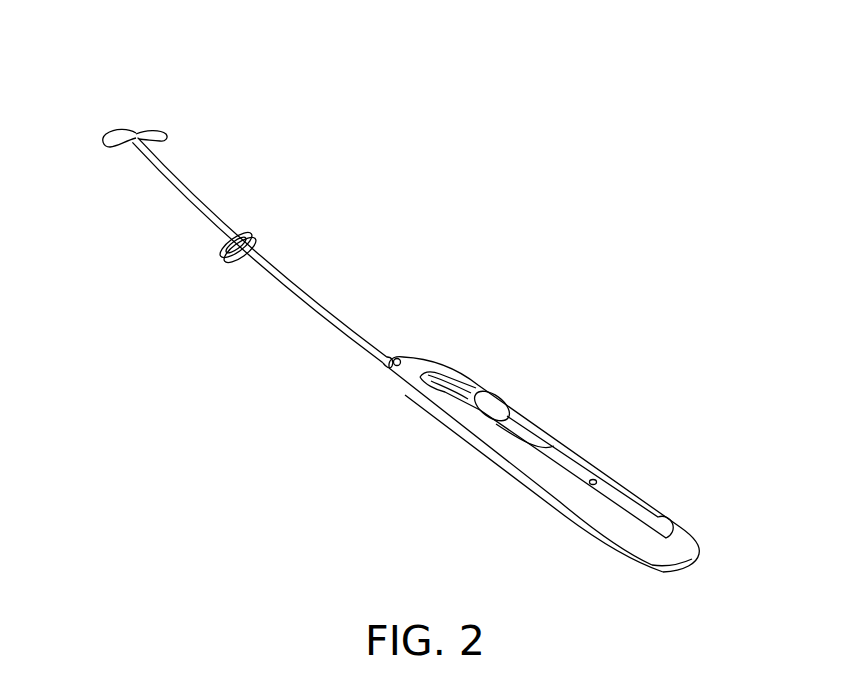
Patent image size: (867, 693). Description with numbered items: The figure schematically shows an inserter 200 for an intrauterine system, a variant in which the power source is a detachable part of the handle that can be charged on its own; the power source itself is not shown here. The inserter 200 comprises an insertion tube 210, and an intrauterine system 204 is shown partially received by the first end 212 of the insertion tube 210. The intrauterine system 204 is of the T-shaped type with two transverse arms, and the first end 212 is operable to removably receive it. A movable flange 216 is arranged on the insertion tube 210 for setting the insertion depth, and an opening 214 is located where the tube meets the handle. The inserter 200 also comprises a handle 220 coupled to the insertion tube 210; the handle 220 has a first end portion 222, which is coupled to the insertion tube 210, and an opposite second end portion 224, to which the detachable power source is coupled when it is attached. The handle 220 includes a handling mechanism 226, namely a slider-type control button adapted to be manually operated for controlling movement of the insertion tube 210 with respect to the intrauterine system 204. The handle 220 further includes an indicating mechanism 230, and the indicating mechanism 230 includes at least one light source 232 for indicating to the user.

The inserter 200 is at (568, 123).
The intrauterine system 204 is at (169, 123).
The insertion tube 210 is at (290, 258).
The first end of the insertion tube 212 is at (126, 150).
The aperture 214 is at (396, 356).
The collar ring 216 is at (222, 262).
The handle 220 is at (448, 436).
The neck 222 is at (395, 371).
The second end portion of the handle 224 is at (664, 573).
The handling mechanism 226 is at (510, 380).
The indicating mechanism 230 is at (412, 346).
The light source 232 is at (386, 362).